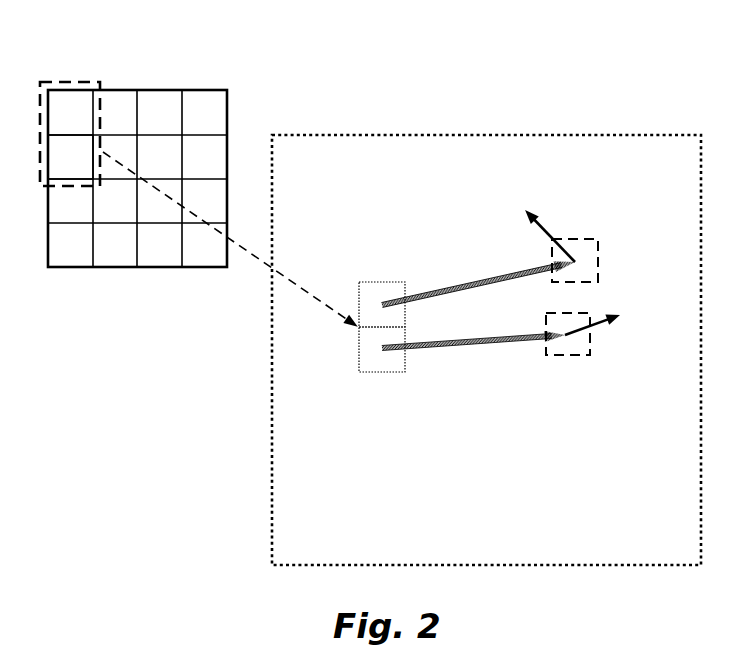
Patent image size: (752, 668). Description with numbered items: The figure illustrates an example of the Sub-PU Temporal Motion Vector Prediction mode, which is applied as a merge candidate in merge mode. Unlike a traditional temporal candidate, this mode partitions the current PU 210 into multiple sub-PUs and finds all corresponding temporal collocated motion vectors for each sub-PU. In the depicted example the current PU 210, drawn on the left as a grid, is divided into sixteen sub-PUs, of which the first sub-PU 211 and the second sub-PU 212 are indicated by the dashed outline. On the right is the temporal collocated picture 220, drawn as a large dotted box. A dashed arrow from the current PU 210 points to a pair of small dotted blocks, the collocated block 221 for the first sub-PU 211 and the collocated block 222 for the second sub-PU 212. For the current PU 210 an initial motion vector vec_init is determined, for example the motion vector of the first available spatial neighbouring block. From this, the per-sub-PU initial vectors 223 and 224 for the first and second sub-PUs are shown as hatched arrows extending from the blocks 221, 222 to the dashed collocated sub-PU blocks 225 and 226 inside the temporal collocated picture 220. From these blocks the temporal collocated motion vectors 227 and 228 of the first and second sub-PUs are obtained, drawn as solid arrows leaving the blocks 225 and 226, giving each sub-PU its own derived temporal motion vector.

The current PU 210 is at (178, 70).
The sub-PU 0 211 is at (97, 111).
The sub-PU 1 212 is at (97, 158).
The temporal collocated picture 220 is at (528, 134).
The collocated block for sub-PU 0 221 is at (380, 282).
The collocated block for sub-PU 1 222 is at (380, 372).
The vec_init_sub_0 223 is at (507, 272).
The vec_init_sub_1 224 is at (508, 340).
The collocated sub-PU block for sub-PU 0 225 is at (598, 258).
The collocated sub-PU block for sub-PU 1 226 is at (590, 343).
The SubPU_MV_0 227 is at (548, 230).
The SubPU_MV_1 228 is at (593, 329).